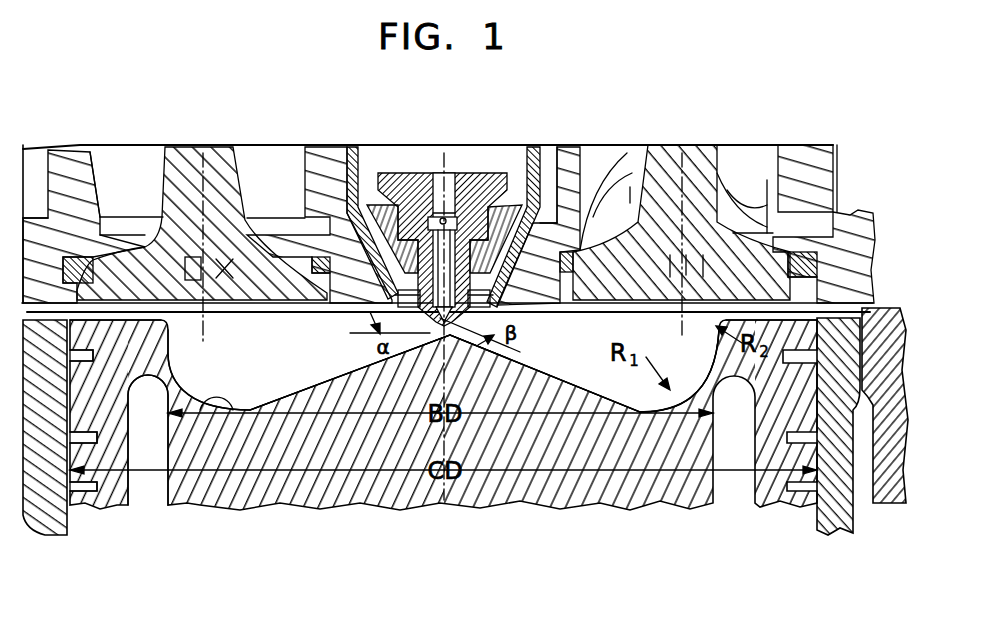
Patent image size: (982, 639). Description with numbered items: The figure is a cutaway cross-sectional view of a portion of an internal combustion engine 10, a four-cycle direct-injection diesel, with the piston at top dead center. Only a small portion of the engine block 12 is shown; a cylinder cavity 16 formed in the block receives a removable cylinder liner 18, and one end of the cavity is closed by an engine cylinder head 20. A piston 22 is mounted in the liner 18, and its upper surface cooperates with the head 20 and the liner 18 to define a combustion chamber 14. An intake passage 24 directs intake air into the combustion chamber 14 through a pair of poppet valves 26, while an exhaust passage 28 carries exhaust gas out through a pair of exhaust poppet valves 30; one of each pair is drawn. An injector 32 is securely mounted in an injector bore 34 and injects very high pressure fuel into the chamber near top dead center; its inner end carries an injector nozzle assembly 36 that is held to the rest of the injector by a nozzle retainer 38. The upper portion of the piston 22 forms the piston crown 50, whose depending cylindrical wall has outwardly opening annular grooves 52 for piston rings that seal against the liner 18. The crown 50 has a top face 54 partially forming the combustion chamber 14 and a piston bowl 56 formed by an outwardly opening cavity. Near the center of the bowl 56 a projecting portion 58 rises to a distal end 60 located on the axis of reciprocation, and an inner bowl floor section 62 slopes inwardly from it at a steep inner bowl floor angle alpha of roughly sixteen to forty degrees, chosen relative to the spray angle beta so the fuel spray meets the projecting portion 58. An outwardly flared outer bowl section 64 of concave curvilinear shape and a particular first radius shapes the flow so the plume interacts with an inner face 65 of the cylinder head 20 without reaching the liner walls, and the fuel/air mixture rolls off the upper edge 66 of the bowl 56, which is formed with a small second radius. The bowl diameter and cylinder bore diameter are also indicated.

The internal combustion engine 10 is at (782, 97).
The engine block 12 is at (884, 483).
The combustion chamber 14 is at (335, 183).
The cylinder cavity 16 is at (78, 517).
The cylinder liner 18 is at (838, 505).
The engine cylinder head 20 is at (800, 197).
The piston 22 is at (532, 505).
The intake passage 24 is at (614, 202).
The poppet valves 26 is at (690, 178).
The exhaust passage 28 is at (120, 172).
The exhaust poppet valves 30 is at (216, 176).
The injector 32 is at (531, 132).
The injector bore 34 is at (554, 158).
The injector nozzle assembly 36 is at (488, 170).
The nozzle retainer 38 is at (357, 162).
The piston crown 50 is at (773, 355).
The annular grooves 52 is at (88, 360).
The top face 54 is at (148, 333).
The piston bowl 56 is at (273, 377).
The projecting portion 58 is at (420, 368).
The distal end 60 is at (463, 338).
The inner bowl floor section 62 is at (553, 372).
The outer bowl section 64 is at (221, 410).
The inner face 65 is at (257, 312).
The upper edge 66 is at (720, 308).